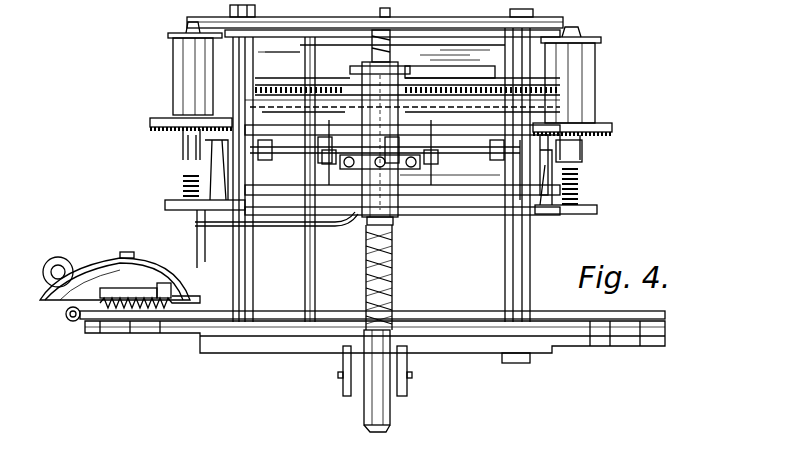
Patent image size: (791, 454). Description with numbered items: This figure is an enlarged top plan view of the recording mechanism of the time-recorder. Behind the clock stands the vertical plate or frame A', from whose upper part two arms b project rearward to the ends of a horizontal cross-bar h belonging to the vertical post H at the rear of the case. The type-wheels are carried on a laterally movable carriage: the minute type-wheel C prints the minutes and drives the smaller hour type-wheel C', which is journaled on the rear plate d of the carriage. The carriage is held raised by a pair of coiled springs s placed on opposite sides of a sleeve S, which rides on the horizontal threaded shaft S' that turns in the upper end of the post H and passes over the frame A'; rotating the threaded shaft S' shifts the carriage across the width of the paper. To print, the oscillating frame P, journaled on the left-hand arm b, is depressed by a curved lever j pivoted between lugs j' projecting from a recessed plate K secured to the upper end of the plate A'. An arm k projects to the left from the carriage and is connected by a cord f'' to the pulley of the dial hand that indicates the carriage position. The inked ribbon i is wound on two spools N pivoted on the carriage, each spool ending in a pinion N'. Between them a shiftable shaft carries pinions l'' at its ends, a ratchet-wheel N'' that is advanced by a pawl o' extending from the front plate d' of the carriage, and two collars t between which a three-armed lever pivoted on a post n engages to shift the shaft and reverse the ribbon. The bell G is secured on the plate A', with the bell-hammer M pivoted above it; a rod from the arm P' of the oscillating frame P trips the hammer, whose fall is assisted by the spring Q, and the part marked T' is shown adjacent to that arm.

The vertical post H is at (386, 17).
The arm b is at (381, 175).
The post n is at (240, 101).
The minute type-wheel C is at (302, 87).
The hour type-wheel C' is at (439, 87).
The inked ribbon i is at (381, 53).
The rear plate of the carriage d is at (450, 67).
The pinion l'' is at (426, 157).
The sleeve S is at (390, 127).
The coiled spring s is at (380, 153).
The collar t is at (379, 152).
The ratchet-wheel N'' is at (333, 192).
The pawl o' is at (450, 187).
The front plate of the carriage d' is at (449, 224).
The threaded shaft S' is at (388, 327).
The spool N is at (371, 72).
The cross-bar h is at (555, 22).
The pinion N' is at (373, 132).
The cord f'' is at (205, 198).
The arm k is at (262, 224).
The oscillating frame P is at (320, 270).
The bell G is at (145, 258).
The bell-hammer M is at (50, 260).
The spring Q is at (150, 289).
The pivot T' is at (61, 322).
The arm P' is at (362, 334).
The vertical plate or frame A' is at (375, 330).
The lug j' is at (371, 371).
The curved lever j is at (400, 404).
The recessed plate K is at (470, 347).